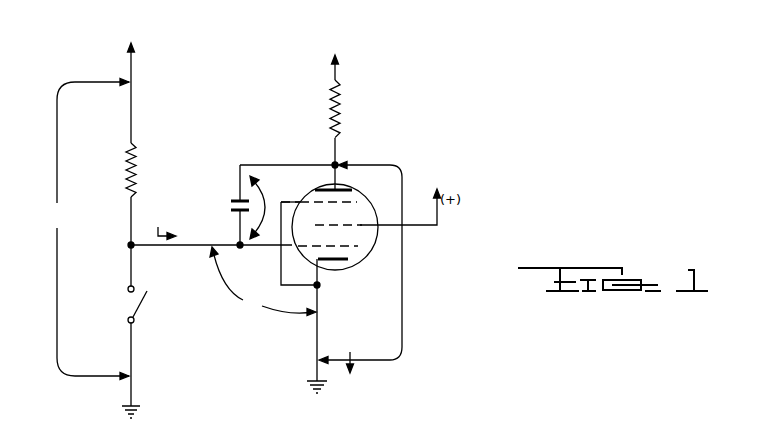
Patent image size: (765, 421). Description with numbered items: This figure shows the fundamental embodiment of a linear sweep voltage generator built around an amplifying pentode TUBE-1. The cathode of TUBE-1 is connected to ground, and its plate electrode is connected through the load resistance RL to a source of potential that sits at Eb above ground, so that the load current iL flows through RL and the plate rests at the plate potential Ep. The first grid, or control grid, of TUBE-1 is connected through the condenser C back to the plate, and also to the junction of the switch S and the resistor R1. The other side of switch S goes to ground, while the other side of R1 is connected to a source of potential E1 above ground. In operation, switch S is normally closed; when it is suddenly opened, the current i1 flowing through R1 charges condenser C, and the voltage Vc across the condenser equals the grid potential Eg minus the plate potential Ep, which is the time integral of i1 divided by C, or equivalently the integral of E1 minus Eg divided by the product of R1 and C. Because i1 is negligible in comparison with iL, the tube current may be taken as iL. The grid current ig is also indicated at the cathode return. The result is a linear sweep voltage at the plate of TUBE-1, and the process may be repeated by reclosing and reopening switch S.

The source of potential E1 is at (99, 209).
The resistor R1 is at (141, 170).
The current i1 is at (137, 186).
The switch S is at (128, 304).
The condenser C is at (228, 196).
The condenser voltage Vc is at (259, 207).
The plate supply potential Eb is at (345, 59).
The load resistance RL is at (344, 109).
The load current iL is at (331, 124).
The plate potential Ep is at (362, 263).
The amplifying pentode tube TUBE-1 is at (366, 262).
The grid potential Eg is at (263, 281).
The grid current ig is at (320, 373).